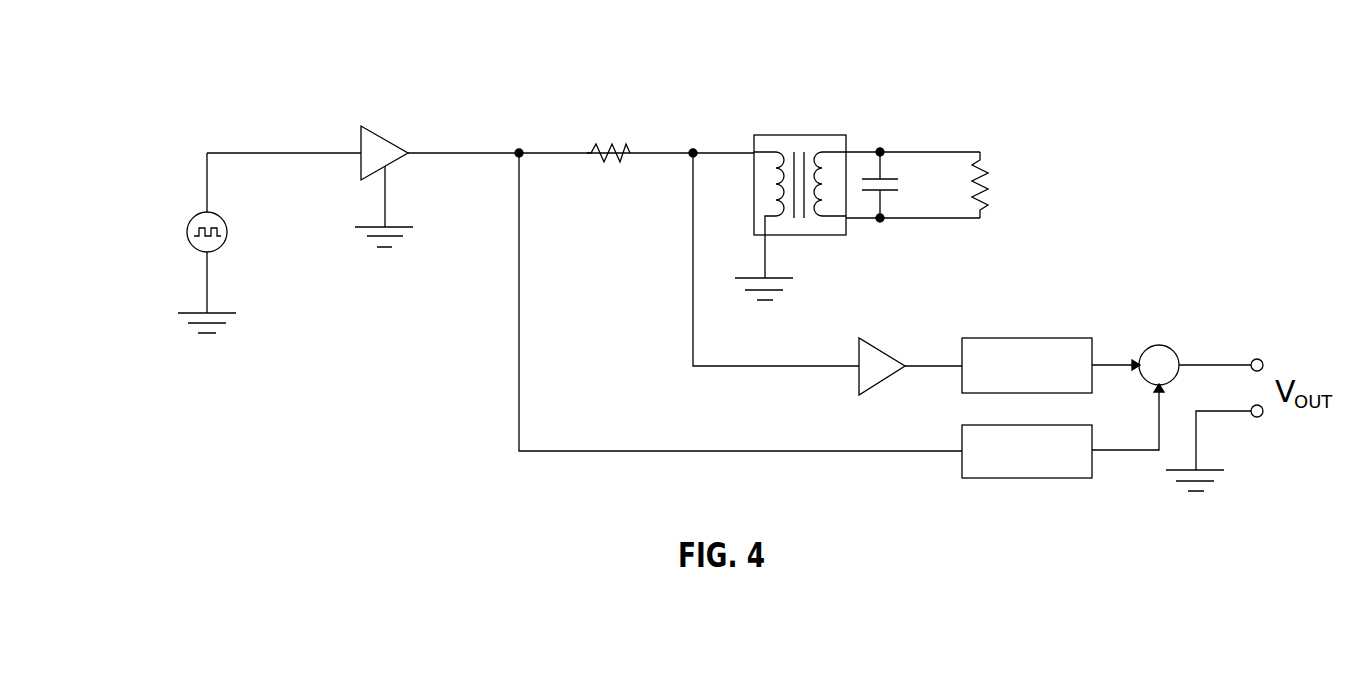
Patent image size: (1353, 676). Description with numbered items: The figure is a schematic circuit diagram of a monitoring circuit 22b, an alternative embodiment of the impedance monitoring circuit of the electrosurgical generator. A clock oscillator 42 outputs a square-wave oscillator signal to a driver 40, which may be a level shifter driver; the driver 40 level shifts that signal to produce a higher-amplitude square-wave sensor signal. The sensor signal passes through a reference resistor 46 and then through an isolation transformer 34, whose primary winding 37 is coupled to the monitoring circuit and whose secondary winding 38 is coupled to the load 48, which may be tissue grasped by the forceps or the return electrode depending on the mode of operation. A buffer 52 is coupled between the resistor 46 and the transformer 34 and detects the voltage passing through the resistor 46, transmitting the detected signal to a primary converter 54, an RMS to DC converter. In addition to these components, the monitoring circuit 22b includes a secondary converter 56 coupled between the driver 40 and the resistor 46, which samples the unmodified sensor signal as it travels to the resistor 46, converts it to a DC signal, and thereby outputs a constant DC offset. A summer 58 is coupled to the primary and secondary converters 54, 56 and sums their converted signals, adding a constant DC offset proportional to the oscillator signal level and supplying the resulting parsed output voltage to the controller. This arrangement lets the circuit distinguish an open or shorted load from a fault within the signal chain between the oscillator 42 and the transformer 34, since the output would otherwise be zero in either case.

The monitoring circuit 22b is at (743, 58).
The isolation transformer 34 is at (813, 211).
The primary winding 37 is at (774, 218).
The secondary winding 38 is at (833, 218).
The driver 40 is at (393, 142).
The clock oscillator 42 is at (186, 233).
The reference resistor 46 is at (610, 150).
The load 48 is at (989, 173).
The buffer 52 is at (885, 348).
The primary converter 54 is at (1027, 338).
The secondary converter 56 is at (1027, 478).
The summer 58 is at (1160, 345).